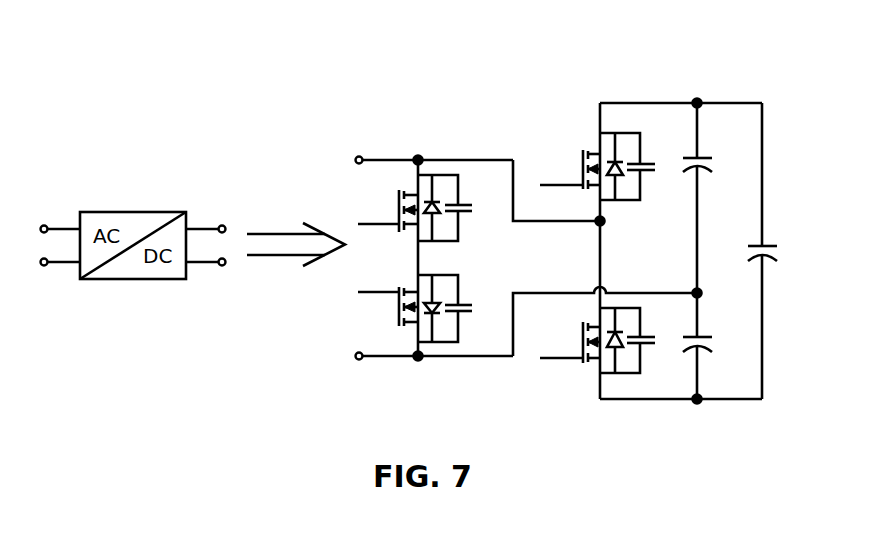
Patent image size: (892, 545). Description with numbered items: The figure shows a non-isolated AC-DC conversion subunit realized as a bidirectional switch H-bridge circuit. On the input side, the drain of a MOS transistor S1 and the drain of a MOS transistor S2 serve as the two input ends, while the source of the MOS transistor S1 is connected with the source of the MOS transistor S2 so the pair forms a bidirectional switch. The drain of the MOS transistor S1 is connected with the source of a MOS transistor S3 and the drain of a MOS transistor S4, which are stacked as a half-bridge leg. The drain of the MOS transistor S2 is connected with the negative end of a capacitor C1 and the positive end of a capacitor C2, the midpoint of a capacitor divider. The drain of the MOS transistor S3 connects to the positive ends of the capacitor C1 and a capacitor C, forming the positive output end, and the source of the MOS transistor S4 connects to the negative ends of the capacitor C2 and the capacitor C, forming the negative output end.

The MOS transistor S1 is at (415, 208).
The MOS transistor S2 is at (415, 308).
The MOS transistor S3 is at (597, 166).
The MOS transistor S4 is at (597, 340).
The capacitor C1 is at (714, 198).
The capacitor C2 is at (714, 346).
The capacitor C is at (774, 253).